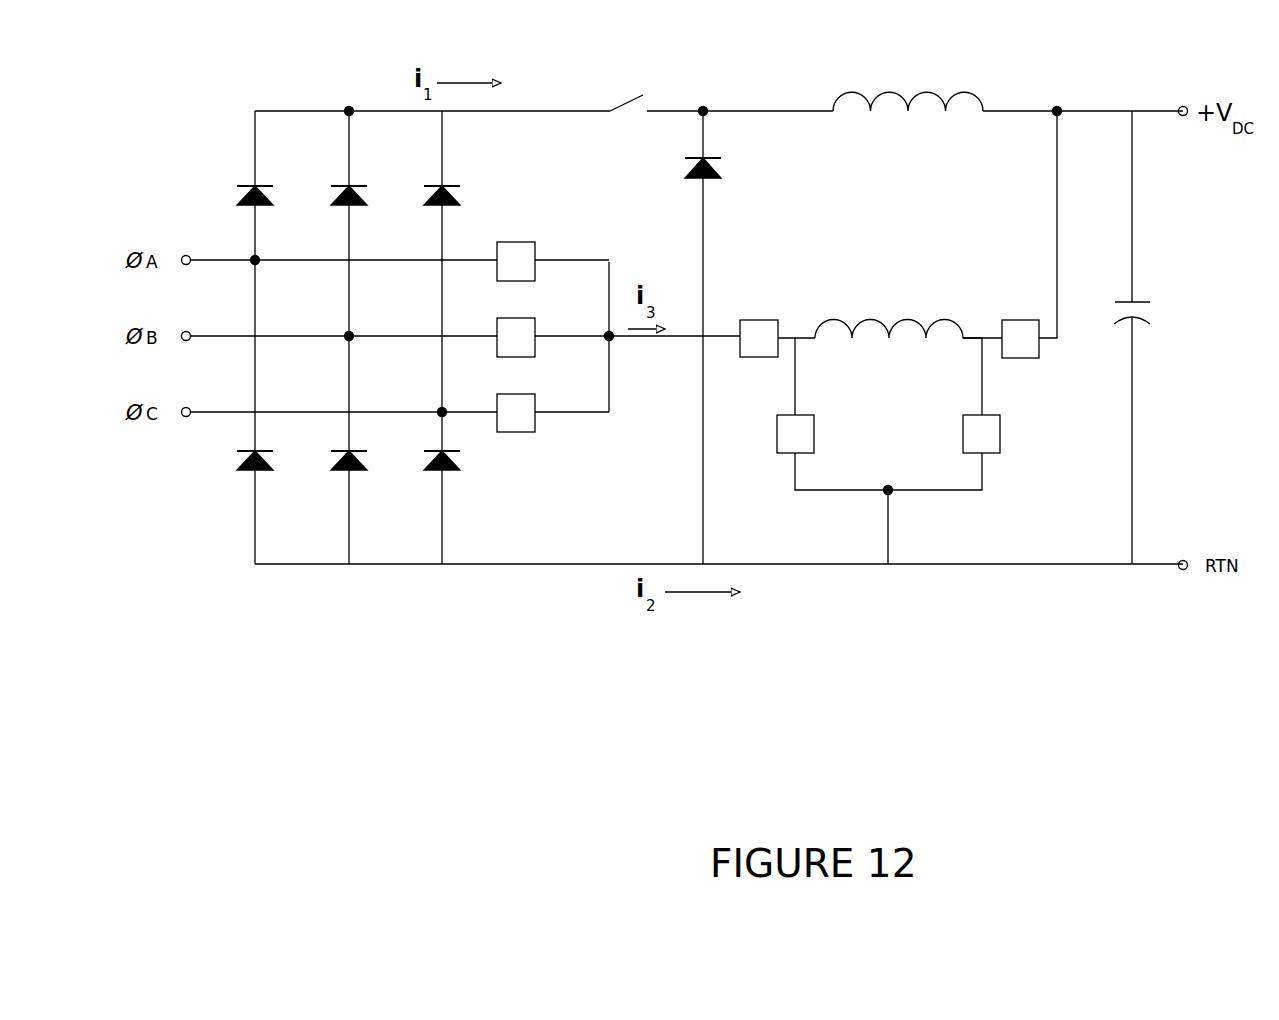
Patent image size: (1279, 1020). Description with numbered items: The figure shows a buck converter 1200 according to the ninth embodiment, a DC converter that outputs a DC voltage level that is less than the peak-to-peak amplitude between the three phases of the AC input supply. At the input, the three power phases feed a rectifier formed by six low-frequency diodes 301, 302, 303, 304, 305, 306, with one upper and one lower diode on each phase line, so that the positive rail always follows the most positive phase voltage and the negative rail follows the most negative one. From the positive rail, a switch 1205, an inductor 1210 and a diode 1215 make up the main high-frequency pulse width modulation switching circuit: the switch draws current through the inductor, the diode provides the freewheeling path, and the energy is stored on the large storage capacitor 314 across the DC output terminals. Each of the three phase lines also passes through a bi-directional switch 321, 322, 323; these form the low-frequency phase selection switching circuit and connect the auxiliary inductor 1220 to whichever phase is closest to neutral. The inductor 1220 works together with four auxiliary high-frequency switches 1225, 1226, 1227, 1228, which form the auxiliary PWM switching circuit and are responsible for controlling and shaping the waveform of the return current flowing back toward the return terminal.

The low-frequency diode 301 is at (277, 208).
The low-frequency diode 302 is at (370, 208).
The low-frequency diode 303 is at (421, 184).
The low-frequency diode 304 is at (276, 473).
The low-frequency diode 305 is at (370, 473).
The low-frequency diode 306 is at (423, 451).
The bi-directional switch 321 is at (539, 243).
The bi-directional switch 322 is at (539, 318).
The bi-directional switch 323 is at (539, 394).
The storage capacitor 314 is at (1153, 297).
The buck converter 1200 is at (421, 660).
The switch 1205 is at (647, 91).
The inductor 1210 is at (890, 93).
The diode 1215 is at (720, 183).
The inductor 1220 is at (908, 320).
The switch 1225 is at (758, 319).
The switch 1226 is at (1020, 319).
The switch 1227 is at (817, 433).
The switch 1228 is at (1003, 433).